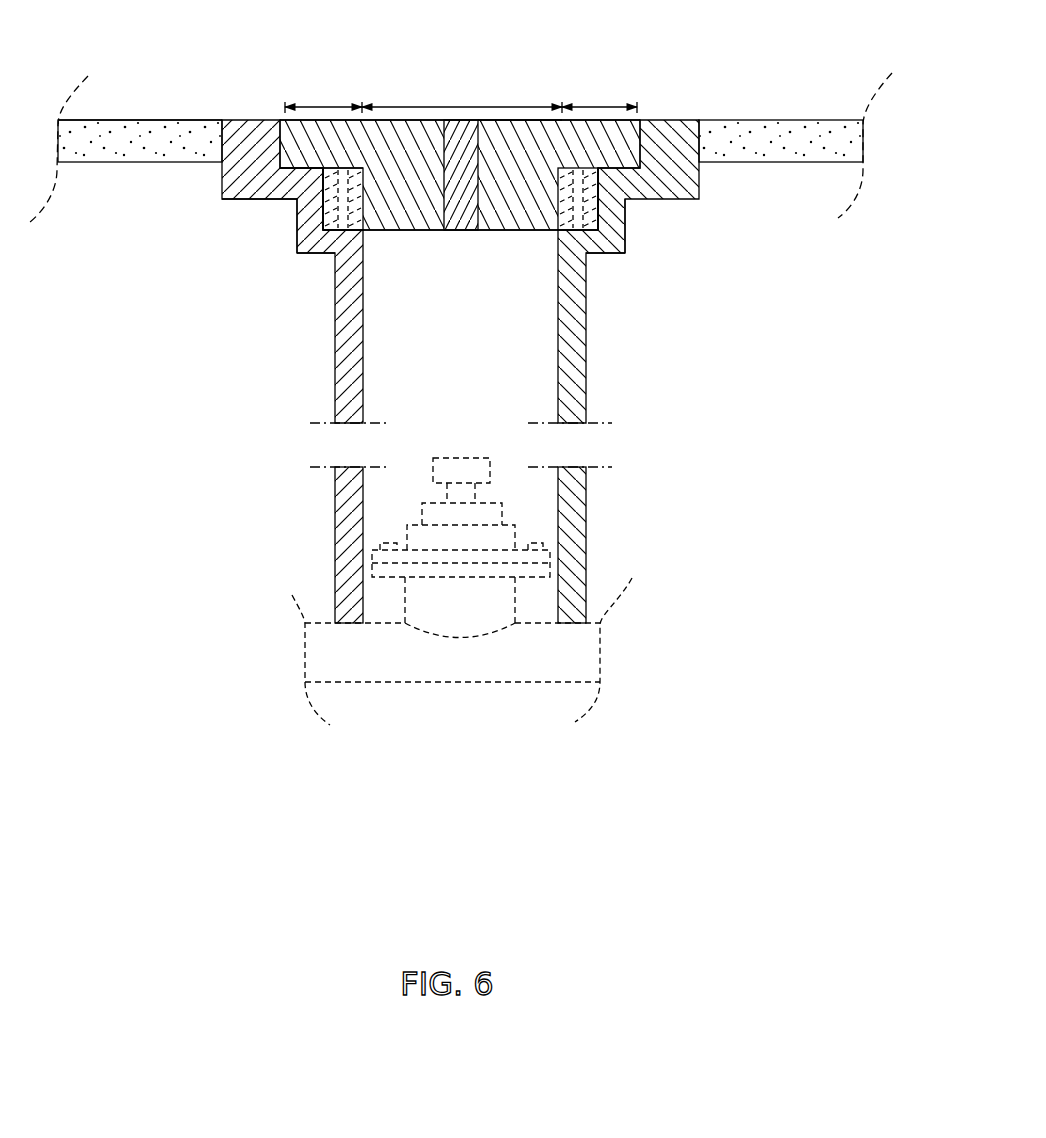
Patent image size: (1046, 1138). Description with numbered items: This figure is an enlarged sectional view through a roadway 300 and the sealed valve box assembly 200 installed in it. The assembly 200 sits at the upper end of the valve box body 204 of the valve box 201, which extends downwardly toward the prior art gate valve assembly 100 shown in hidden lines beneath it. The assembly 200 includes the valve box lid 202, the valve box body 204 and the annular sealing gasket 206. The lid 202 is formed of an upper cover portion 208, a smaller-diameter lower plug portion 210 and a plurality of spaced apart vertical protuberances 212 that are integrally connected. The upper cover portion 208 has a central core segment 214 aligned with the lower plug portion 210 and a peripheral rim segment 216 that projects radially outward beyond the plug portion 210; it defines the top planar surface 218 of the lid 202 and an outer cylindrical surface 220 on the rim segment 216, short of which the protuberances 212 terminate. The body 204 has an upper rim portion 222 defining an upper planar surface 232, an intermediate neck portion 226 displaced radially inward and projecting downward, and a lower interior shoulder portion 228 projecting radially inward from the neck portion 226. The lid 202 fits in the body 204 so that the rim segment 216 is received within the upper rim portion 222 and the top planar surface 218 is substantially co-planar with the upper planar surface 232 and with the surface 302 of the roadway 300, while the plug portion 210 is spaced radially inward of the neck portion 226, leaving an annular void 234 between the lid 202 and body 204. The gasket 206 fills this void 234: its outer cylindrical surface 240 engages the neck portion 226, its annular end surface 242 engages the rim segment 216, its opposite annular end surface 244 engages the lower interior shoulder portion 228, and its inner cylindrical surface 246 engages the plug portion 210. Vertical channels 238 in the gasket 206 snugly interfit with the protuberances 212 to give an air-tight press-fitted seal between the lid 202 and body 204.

The gate valve assembly 100 is at (530, 535).
The sealed valve box assembly 200 is at (713, 43).
The valve box 201 is at (240, 360).
The valve box lid 202 is at (530, 113).
The valve box body 204 is at (297, 252).
The annular sealing gasket 206 is at (316, 212).
The upper cover portion 208 is at (641, 119).
The lower plug portion 210 is at (512, 232).
The vertical protuberances 212 is at (368, 240).
The central core segment 214 is at (444, 118).
The peripheral rim segment 216 is at (333, 106).
The top planar surface 218 is at (490, 118).
The outer cylindrical surface 220 is at (278, 145).
The upper rim portion 222 is at (222, 152).
The intermediate neck portion 226 is at (297, 207).
The lower interior shoulder portion 228 is at (608, 255).
The upper planar surface 232 is at (272, 118).
The annular void 234 is at (622, 236).
The vertical channels 238 is at (363, 292).
The outer cylindrical surface 240 is at (600, 228).
The annular end surface 242 is at (364, 166).
The opposite annular end surface 244 is at (324, 237).
The inner cylindrical surface 246 is at (365, 170).
The roadway 300 is at (95, 127).
The surface 302 is at (155, 120).